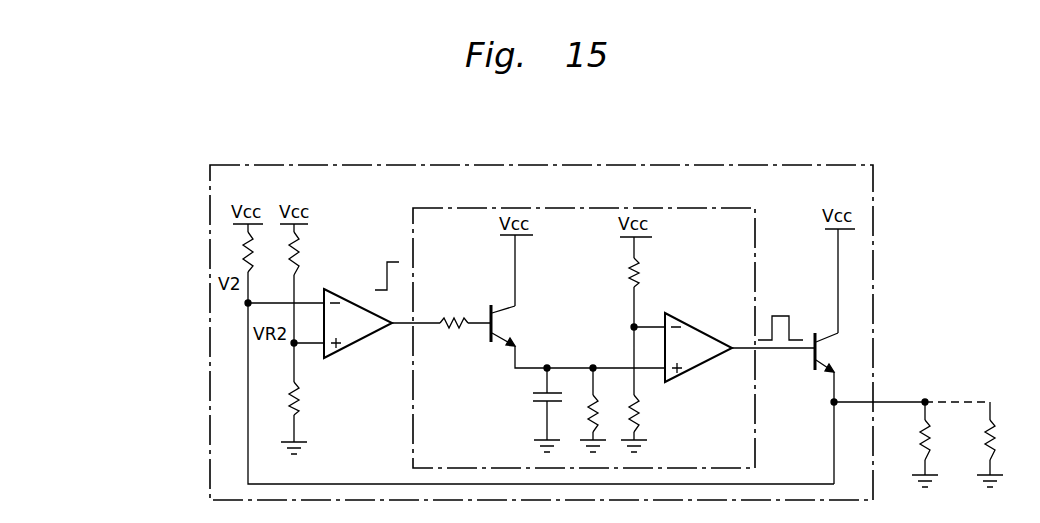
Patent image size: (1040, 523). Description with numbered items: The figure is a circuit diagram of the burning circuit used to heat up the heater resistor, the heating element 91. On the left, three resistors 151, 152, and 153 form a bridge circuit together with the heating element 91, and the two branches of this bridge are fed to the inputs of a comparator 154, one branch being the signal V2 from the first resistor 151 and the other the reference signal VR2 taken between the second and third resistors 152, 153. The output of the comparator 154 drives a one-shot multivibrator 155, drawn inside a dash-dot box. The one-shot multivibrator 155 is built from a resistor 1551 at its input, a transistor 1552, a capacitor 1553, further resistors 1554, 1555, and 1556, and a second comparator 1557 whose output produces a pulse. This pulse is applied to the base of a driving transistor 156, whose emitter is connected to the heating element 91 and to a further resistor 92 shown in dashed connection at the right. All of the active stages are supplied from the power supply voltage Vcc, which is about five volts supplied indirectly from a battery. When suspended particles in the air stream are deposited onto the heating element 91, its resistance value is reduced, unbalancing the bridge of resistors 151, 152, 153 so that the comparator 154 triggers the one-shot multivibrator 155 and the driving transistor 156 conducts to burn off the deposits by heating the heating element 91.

The resistor 151 is at (270, 256).
The resistor 152 is at (300, 262).
The resistor 153 is at (300, 400).
The comparator 154 is at (352, 345).
The one-shot multivibrator 155 is at (678, 207).
The resistor 1551 is at (452, 320).
The transistor 1552 is at (503, 335).
The capacitor 1553 is at (530, 400).
The resistor 1554 is at (600, 412).
The resistor 1555 is at (642, 276).
The resistor 1556 is at (640, 413).
The comparator 1557 is at (706, 334).
The driving transistor 156 is at (821, 376).
The heating element 91 is at (948, 436).
The resistor 92 is at (996, 430).